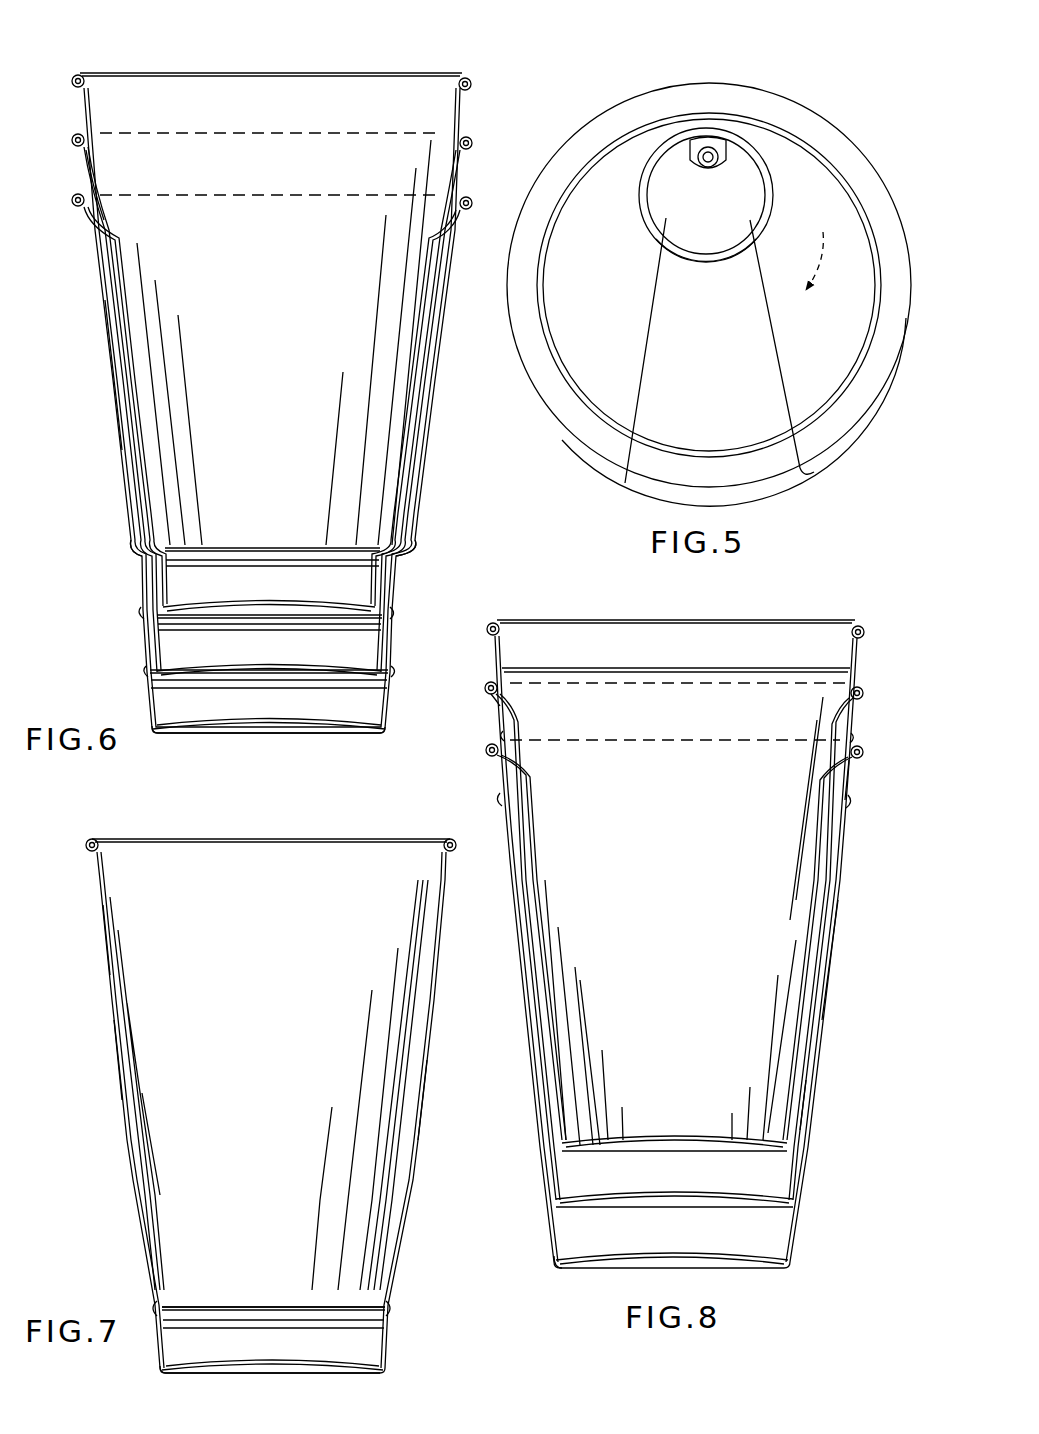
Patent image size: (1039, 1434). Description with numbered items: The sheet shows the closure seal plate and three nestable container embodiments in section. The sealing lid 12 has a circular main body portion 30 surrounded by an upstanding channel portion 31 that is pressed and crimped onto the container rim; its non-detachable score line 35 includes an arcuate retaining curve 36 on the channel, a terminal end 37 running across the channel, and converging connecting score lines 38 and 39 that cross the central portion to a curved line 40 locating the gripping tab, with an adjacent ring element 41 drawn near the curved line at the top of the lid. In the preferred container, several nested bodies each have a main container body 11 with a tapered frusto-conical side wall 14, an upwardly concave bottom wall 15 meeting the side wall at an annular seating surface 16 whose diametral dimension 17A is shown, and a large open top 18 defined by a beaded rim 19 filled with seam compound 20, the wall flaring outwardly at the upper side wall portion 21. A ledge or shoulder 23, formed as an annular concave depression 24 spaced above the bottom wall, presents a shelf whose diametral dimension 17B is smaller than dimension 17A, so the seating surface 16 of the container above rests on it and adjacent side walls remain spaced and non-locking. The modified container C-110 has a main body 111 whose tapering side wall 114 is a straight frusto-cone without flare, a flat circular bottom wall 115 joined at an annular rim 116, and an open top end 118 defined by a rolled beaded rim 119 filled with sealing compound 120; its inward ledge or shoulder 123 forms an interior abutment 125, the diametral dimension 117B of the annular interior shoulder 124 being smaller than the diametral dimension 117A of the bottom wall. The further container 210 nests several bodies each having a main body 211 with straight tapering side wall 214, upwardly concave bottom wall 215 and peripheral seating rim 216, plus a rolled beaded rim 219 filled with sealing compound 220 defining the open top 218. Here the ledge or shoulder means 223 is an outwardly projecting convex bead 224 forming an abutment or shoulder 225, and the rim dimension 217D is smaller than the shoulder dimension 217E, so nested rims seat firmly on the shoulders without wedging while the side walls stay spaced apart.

In FIG. 6, the open top 18 is at (279, 78).
In FIG. 6, the main container body 11 is at (466, 110).
In FIG. 6, the seam compound 20 is at (76, 77).
In FIG. 6, the beaded rim 19 is at (471, 82).
In FIG. 6, the outwardly flaring upper side wall portion 21 is at (90, 97).
In FIG. 6, the side wall 14 is at (130, 437).
In FIG. 6, the ledge or shoulder 23 is at (170, 545).
In FIG. 6, the diametral dimension of shelf 17B is at (378, 520).
In FIG. 6, the annular concave depression 24 is at (400, 554).
In FIG. 6, the bottom wall 15 is at (228, 601).
In FIG. 6, the annular peripheral lower rim or seating surface 16 is at (157, 731).
In FIG. 6, the diametral dimension of seating surface 17A is at (385, 767).
In FIG. 5, the main sealing lid 12 is at (764, 86).
In FIG. 5, the peripheral annular upstanding channel portion 31 is at (818, 127).
In FIG. 5, the circular main body portion 30 is at (820, 387).
In FIG. 5, the pull ring 41 is at (773, 204).
In FIG. 5, the curved line 40 is at (677, 160).
In FIG. 5, the terminal end 37 is at (623, 480).
In FIG. 5, the arcuate leading or retaining curve 36 is at (799, 472).
In FIG. 5, the score line 35 is at (641, 371).
In FIG. 5, the connecting score line 38 is at (628, 408).
In FIG. 5, the connecting score line 39 is at (775, 379).
In FIG. 7, the open top end 118 is at (249, 854).
In FIG. 7, the rolled beaded rim 119 is at (86, 845).
In FIG. 7, the sealing compound 120 is at (452, 862).
In FIG. 7, the modified container C-110 is at (101, 962).
In FIG. 7, the main body 111 is at (121, 1091).
In FIG. 7, the tapering side wall 114 is at (412, 1152).
In FIG. 7, the inward annular ledge or shoulder 123 is at (165, 1300).
In FIG. 7, the diametral dimension of interior shoulder 117B is at (375, 1250).
In FIG. 7, the interior abutment or shoulder 125 is at (292, 1305).
In FIG. 7, the annular interior shoulder 124 is at (390, 1316).
In FIG. 7, the bottom wall 115 is at (305, 1376).
In FIG. 7, the annular rim 116 is at (158, 1372).
In FIG. 7, the diametral dimension of bottom wall 117A is at (385, 1402).
In FIG. 8, the open top 218 is at (651, 640).
In FIG. 8, the rolled beaded rim 219 is at (491, 622).
In FIG. 8, the diametral dimension of beaded rim 217D is at (845, 615).
In FIG. 8, the container 210 is at (857, 654).
In FIG. 8, the sealing compound 220 is at (491, 641).
In FIG. 8, the annular convex bead or rim 224 is at (508, 692).
In FIG. 8, the abutment or shoulder 225 is at (493, 757).
In FIG. 8, the annular ledge or shoulder means 223 is at (856, 733).
In FIG. 8, the diametral dimension of shoulder 217E is at (503, 838).
In FIG. 8, the main body 211 is at (829, 986).
In FIG. 8, the side wall 214 is at (807, 1128).
In FIG. 8, the bottom wall 215 is at (641, 1143).
In FIG. 8, the annular or peripheral seating rim 216 is at (543, 1207).